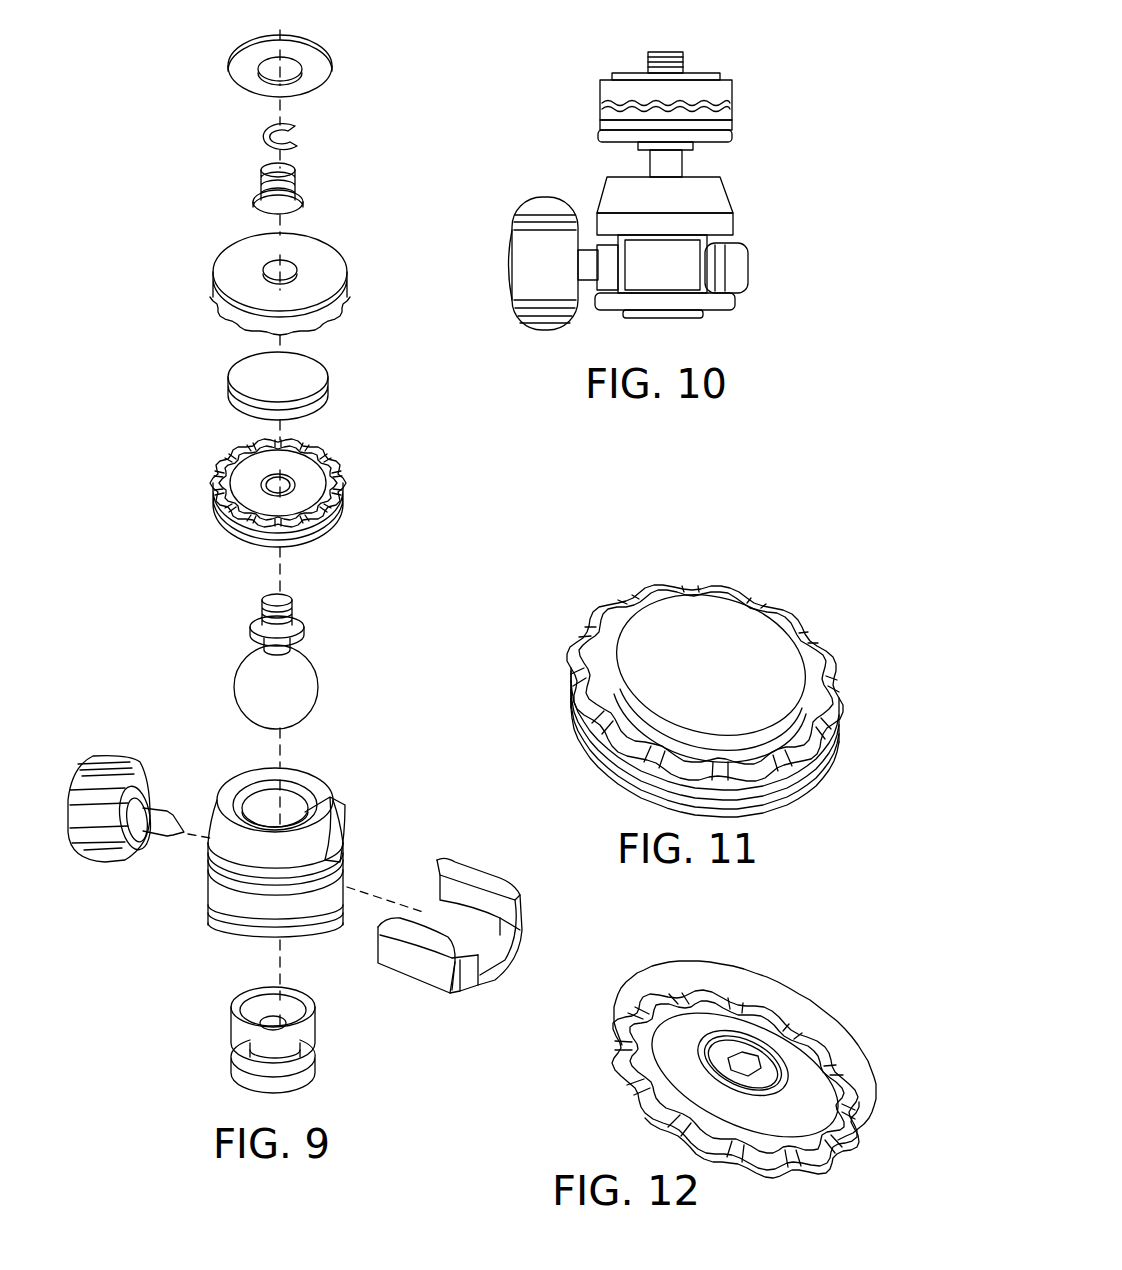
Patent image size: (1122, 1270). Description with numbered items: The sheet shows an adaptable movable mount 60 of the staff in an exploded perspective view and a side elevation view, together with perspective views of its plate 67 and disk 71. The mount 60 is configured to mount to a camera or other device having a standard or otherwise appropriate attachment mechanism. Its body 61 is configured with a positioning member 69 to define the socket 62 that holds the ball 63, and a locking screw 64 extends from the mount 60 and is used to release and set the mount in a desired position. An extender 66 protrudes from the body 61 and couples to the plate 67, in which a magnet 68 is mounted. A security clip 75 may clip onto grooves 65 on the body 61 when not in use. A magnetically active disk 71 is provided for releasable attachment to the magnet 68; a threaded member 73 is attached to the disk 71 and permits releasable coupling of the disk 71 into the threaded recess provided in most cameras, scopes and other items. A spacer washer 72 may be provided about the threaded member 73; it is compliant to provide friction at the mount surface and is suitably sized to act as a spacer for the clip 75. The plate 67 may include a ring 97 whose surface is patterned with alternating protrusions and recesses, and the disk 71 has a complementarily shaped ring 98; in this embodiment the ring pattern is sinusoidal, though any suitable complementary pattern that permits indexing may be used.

In FIG. 9, the adaptable movable mount 60 is at (150, 228).
In FIG. 9, the body 61 is at (333, 778).
In FIG. 10, the body 61 is at (671, 247).
In FIG. 9, the socket 62 is at (268, 993).
In FIG. 9, the ball 63 is at (296, 688).
In FIG. 9, the locking screw 64 is at (108, 752).
In FIG. 10, the locking screw 64 is at (564, 263).
In FIG. 9, the grooves 65 is at (232, 915).
In FIG. 9, the extender 66 is at (325, 631).
In FIG. 9, the plate 67 is at (352, 481).
In FIG. 11, the plate 67 is at (726, 658).
In FIG. 9, the magnet 68 is at (326, 382).
In FIG. 11, the magnet 68 is at (704, 640).
In FIG. 9, the positioning member 69 is at (305, 1085).
In FIG. 9, the magnetically active disk 71 is at (344, 272).
In FIG. 10, the magnetically active disk 71 is at (665, 97).
In FIG. 12, the magnetically active disk 71 is at (715, 1045).
In FIG. 9, the spacer washer 72 is at (320, 62).
In FIG. 9, the threaded member 73 is at (297, 193).
In FIG. 12, the threaded member 73 is at (768, 1080).
In FIG. 9, the security clip 75 is at (408, 984).
In FIG. 11, the ring 97 is at (775, 757).
In FIG. 12, the complementarily shaped ring 98 is at (640, 1083).